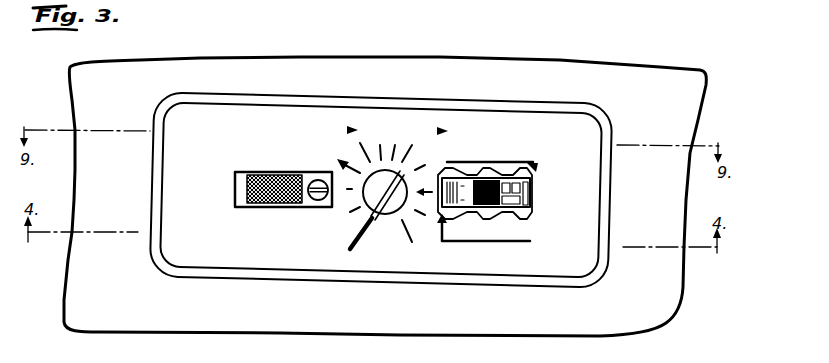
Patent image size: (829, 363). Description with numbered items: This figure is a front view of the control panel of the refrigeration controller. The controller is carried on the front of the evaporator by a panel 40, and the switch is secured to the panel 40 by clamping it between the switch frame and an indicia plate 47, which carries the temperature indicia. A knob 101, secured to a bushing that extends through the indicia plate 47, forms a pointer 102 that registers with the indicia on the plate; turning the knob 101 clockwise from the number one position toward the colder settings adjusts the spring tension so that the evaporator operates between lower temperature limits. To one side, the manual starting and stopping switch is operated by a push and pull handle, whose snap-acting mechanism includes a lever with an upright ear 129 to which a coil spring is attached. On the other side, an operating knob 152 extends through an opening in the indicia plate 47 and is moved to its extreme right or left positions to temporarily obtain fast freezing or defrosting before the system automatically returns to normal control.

The panel 40 is at (479, 70).
The indicia plate 47 is at (507, 118).
The knob 101 is at (370, 173).
The pointer 102 is at (380, 213).
The upright ear 129 is at (247, 188).
The operating knob 152 is at (522, 194).